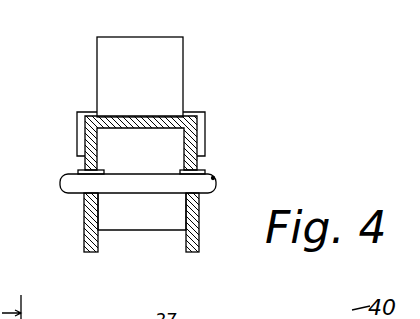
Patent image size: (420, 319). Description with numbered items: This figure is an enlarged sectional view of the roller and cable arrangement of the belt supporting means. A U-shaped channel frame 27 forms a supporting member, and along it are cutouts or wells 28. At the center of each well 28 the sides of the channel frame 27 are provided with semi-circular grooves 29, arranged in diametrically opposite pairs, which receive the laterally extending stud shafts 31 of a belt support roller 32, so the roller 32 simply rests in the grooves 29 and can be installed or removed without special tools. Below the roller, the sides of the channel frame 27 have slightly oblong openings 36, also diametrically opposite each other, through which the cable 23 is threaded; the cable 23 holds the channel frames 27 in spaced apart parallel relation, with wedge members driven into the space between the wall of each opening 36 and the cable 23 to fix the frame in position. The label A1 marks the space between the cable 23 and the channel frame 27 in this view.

The belt support roller 32 is at (183, 43).
The well 28 is at (205, 113).
The stud shaft 31 is at (205, 132).
The semi-circular groove 29 is at (200, 152).
The opening 36 is at (214, 182).
The channel frame 27 is at (199, 248).
The cable 23 is at (133, 191).
The gap A1 is at (173, 163).